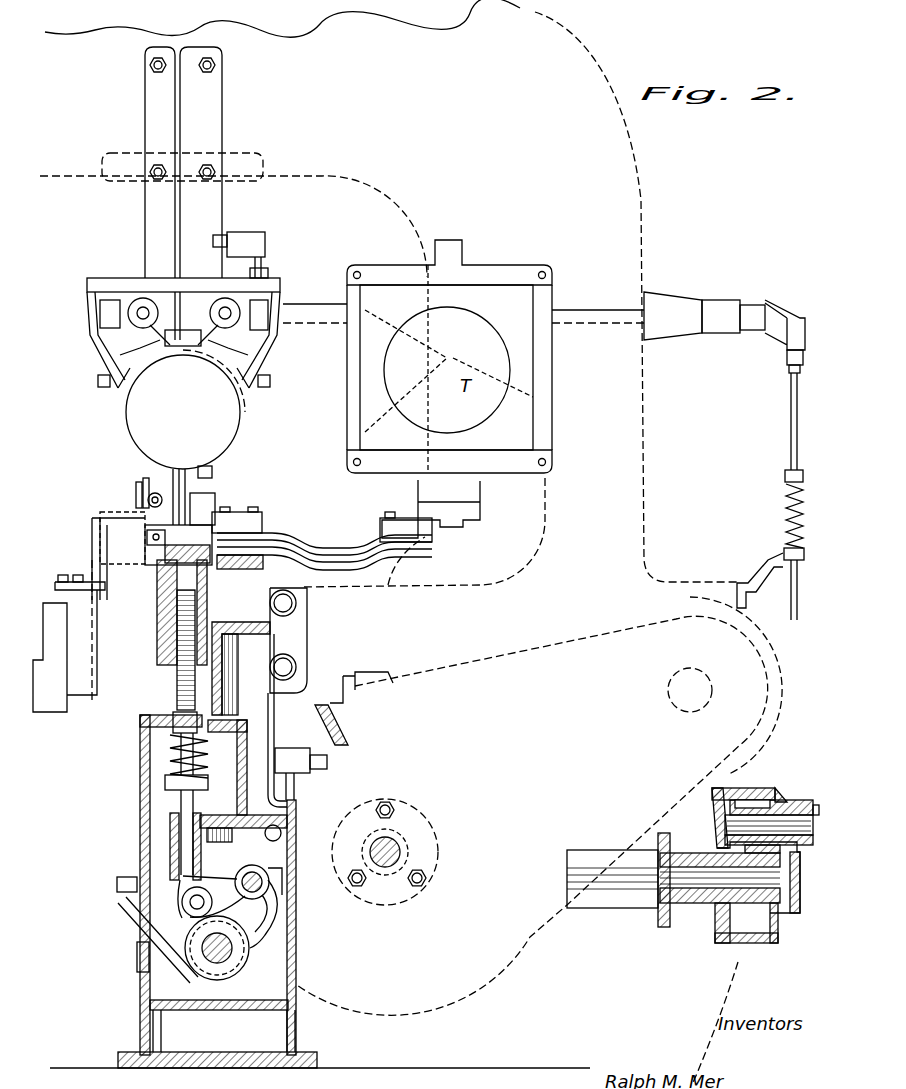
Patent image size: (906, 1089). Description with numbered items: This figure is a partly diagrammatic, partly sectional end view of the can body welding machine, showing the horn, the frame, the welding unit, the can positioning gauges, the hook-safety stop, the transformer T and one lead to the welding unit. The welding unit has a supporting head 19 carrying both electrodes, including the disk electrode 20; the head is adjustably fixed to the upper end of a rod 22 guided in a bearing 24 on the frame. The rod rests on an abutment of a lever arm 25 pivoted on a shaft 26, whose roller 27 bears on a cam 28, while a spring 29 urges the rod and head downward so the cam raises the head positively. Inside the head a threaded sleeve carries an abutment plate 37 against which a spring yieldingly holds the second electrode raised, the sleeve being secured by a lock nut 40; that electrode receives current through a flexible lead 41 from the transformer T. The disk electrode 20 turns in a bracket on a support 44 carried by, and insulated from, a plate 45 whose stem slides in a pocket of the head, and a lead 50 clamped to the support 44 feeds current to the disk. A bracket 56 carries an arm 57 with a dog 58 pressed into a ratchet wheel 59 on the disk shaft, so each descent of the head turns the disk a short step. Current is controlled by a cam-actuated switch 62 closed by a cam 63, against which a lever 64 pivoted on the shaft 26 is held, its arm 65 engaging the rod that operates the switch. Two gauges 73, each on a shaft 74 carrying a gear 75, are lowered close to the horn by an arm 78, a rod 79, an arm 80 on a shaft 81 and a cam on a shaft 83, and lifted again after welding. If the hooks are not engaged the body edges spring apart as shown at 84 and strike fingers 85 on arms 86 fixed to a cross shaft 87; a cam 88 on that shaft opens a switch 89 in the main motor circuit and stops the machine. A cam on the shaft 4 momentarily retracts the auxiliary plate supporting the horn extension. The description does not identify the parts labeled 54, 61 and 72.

The shaft 4 is at (230, 425).
The supporting head 19 is at (170, 612).
The welding electrode 20 is at (203, 950).
The rod 22 is at (197, 617).
The bearing 24 is at (170, 838).
The lever arm 25 is at (240, 878).
The shaft 26 is at (290, 905).
The roller 27 is at (182, 902).
The cam 28 is at (173, 716).
The spring 29 is at (170, 758).
The abutment plate 37 is at (215, 502).
The lock nut 40 is at (183, 470).
The lead 41 is at (212, 470).
The support 44 is at (162, 462).
The plate 45 is at (157, 562).
The lead 50 is at (305, 553).
The block 54 is at (150, 555).
The bracket 56 is at (100, 515).
The arm 57 is at (148, 498).
The dog 58 is at (150, 538).
The ratchet wheel 59 is at (150, 472).
The flange 61 is at (352, 798).
The switch 62 is at (292, 760).
The cam 63 is at (253, 965).
The lever 64 is at (257, 930).
The arm 65 is at (296, 886).
The arm 72 is at (140, 352).
The gauge 73 is at (228, 352).
The shaft 74 is at (140, 290).
The gear 75 is at (222, 292).
The arm 78 is at (775, 320).
The rod 79 is at (791, 422).
The arm 80 is at (800, 800).
The shaft 81 is at (769, 825).
The shaft 83 is at (673, 880).
The separated can body edges 84 is at (250, 418).
The finger 85 is at (103, 382).
The arm 86 is at (92, 335).
The cross shaft 87 is at (268, 284).
The cam 88 is at (262, 275).
The switch 89 is at (250, 233).